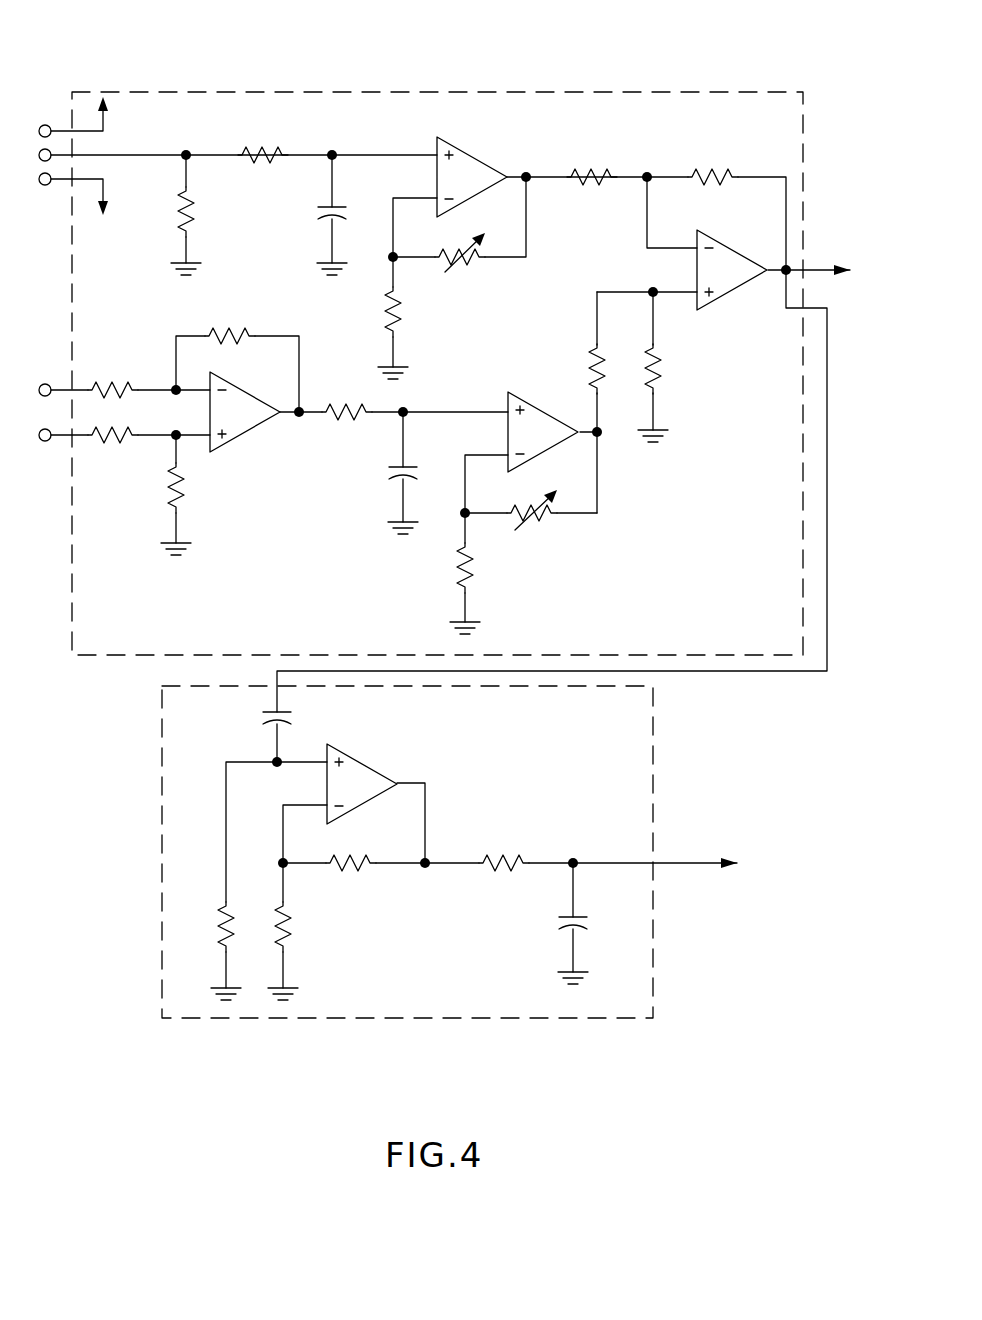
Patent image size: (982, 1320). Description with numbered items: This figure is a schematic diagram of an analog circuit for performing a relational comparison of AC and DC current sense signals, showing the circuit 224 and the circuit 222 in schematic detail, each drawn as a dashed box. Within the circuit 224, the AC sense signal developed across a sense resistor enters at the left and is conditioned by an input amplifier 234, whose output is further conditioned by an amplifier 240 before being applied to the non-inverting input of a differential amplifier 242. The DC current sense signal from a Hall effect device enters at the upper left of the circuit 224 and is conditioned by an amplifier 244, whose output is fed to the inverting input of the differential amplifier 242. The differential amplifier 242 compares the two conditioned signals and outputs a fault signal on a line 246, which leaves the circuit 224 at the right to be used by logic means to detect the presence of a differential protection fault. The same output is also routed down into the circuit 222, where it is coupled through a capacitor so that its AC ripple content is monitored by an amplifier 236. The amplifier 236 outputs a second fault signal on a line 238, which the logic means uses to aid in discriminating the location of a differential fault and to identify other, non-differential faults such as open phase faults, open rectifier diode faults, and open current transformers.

The circuit 224 is at (395, 92).
The circuit 222 is at (545, 1018).
The amplifier 244 is at (468, 152).
The differential amplifier 242 is at (735, 288).
The amplifier 240 is at (548, 408).
The input amplifier 234 is at (248, 430).
The amplifier 236 is at (358, 758).
The line 246 is at (813, 268).
The line 238 is at (680, 858).